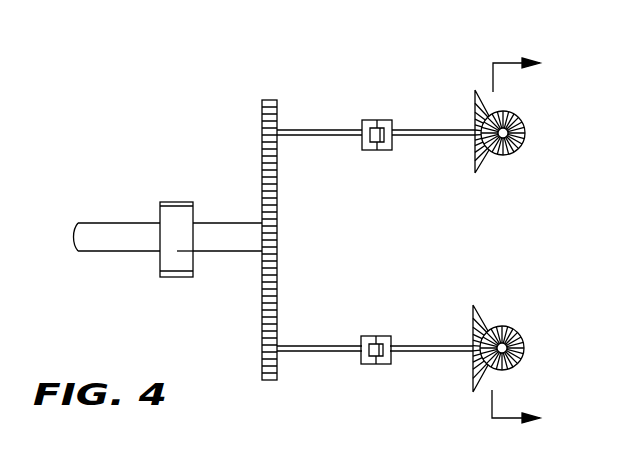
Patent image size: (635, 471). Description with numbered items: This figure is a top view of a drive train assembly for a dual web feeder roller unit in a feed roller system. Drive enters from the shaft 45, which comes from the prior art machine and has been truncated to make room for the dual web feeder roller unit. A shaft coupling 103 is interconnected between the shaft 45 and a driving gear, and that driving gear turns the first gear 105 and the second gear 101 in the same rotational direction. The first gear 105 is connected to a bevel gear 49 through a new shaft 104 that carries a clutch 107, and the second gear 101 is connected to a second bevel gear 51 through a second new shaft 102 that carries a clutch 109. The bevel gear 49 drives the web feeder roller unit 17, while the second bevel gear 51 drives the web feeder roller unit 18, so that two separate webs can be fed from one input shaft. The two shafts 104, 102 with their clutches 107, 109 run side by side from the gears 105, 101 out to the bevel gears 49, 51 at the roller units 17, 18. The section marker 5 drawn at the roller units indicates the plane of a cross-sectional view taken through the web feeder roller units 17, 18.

The shaft 45 is at (112, 223).
The shaft coupling 103 is at (178, 202).
The first gear 105 is at (270, 100).
The second gear 101 is at (277, 365).
The new shaft 104 is at (318, 130).
The clutch 107 is at (372, 120).
The web feeder roller unit 17 is at (514, 118).
The bevel gear 49 is at (479, 165).
The second new shaft 102 is at (318, 346).
The clutch 109 is at (372, 336).
The web feeder roller unit 18 is at (512, 328).
The second bevel gear 51 is at (479, 318).
The section line 5- 5 is at (524, 240).